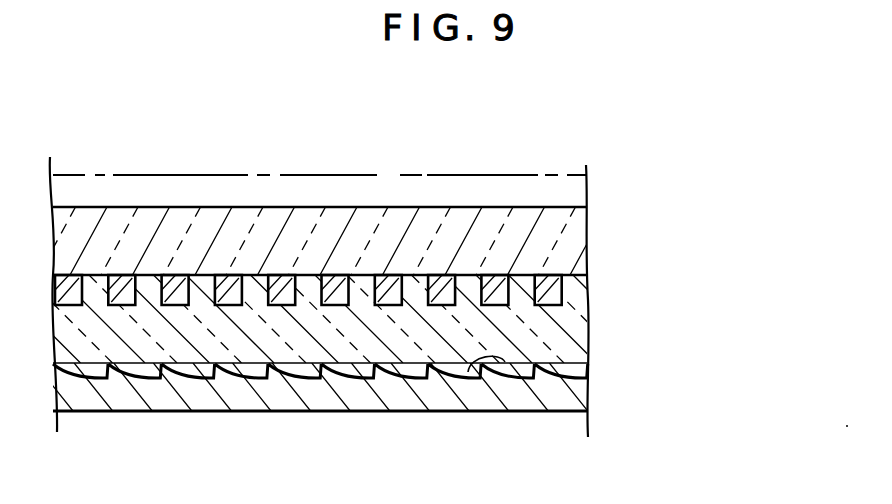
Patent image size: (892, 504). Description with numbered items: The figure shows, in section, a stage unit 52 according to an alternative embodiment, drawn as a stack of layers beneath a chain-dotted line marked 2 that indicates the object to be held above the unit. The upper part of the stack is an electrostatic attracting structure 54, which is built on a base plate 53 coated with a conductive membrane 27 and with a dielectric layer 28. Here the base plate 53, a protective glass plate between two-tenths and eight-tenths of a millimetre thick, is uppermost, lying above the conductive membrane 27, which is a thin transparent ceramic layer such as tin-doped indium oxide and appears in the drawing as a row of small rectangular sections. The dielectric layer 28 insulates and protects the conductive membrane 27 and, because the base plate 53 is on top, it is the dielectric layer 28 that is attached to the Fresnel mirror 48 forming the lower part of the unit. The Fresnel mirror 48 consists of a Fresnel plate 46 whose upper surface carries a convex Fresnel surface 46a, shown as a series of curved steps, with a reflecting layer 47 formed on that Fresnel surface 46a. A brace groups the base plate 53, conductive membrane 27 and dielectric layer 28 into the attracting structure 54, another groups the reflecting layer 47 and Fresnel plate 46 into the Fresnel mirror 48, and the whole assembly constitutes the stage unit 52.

The magnetic tape 2 is at (455, 175).
The base plate 53 is at (582, 246).
The conductive membrane 27 is at (582, 301).
The dielectric layer 28 is at (353, 319).
The electrostatic attracting structure 54 is at (384, 285).
The reflecting layer 47 is at (582, 371).
The Fresnel plate 46 is at (582, 410).
The Fresnel surface 46a is at (468, 372).
The Fresnel mirror 48 is at (403, 415).
The stage unit 52 is at (420, 340).